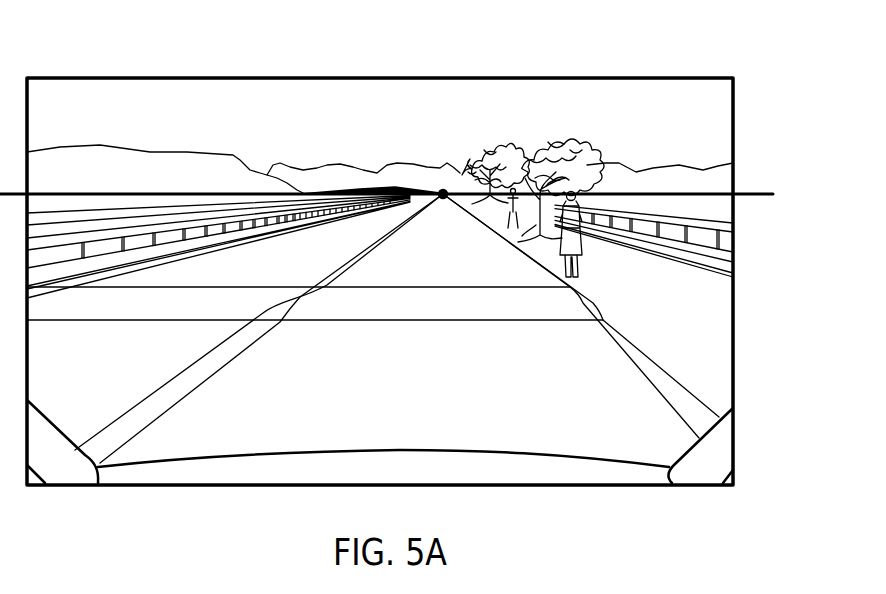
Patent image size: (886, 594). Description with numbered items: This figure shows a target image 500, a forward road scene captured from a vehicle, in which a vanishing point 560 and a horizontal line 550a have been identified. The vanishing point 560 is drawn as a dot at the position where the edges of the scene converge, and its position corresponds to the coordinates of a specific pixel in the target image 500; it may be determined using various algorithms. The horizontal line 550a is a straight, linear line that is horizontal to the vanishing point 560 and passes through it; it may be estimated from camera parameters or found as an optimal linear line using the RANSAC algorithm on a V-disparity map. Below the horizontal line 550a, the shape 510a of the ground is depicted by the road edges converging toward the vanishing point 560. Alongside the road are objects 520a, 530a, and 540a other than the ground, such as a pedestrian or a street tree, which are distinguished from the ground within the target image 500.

The target image 500 is at (138, 77).
The shape of the ground 510a is at (674, 377).
The object other than the ground 520a is at (505, 186).
The object other than the ground 530a is at (535, 186).
The object other than the ground 540a is at (733, 229).
The horizontal line 550a is at (757, 193).
The vanishing point 560 is at (443, 190).